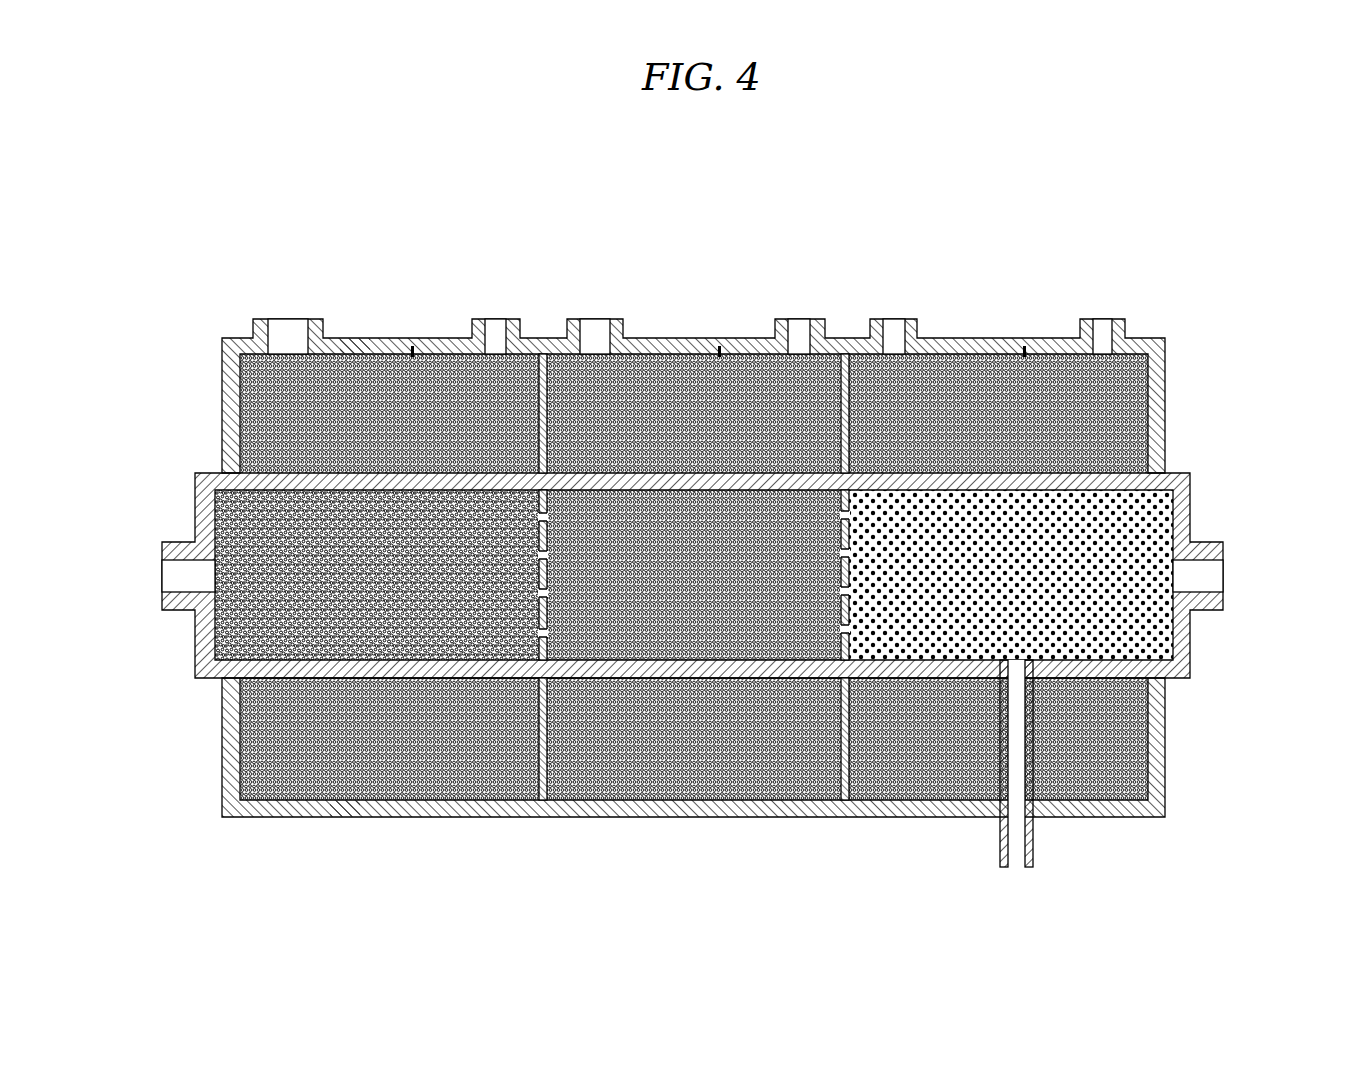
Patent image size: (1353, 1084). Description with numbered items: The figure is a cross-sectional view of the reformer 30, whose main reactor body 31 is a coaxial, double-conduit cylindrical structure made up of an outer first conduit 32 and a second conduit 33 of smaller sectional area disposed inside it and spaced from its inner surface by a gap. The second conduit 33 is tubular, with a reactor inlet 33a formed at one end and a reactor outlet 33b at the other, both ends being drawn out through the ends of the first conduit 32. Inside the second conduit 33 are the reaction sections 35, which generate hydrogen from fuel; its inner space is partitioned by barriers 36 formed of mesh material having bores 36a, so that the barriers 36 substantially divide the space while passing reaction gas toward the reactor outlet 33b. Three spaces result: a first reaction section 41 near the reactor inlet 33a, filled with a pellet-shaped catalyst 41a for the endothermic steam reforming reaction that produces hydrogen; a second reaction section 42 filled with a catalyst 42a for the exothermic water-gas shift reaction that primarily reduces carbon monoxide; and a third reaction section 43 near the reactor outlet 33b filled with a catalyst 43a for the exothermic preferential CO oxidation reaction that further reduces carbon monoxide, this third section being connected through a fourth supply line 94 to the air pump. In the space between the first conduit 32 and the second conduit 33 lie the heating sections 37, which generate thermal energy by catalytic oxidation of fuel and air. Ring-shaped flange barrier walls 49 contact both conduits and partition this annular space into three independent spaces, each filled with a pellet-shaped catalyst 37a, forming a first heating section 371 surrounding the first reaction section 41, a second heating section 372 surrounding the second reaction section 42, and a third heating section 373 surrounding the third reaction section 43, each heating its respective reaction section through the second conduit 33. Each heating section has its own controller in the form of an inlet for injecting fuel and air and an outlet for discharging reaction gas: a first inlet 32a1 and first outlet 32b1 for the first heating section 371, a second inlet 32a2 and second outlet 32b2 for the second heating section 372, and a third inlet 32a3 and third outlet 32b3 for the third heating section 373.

The reformer 30 is at (1195, 237).
The main reactor body 31 is at (740, 498).
The first conduit 32 is at (1150, 346).
The second conduit 33 is at (712, 557).
The first inlet 32a1 is at (290, 318).
The first outlet 32b1 is at (497, 318).
The second inlet 32a2 is at (593, 318).
The second outlet 32b2 is at (797, 318).
The third inlet 32a3 is at (893, 318).
The third outlet 32b3 is at (1103, 318).
The reactor inlet 33a is at (160, 576).
The reactor outlet 33b is at (1225, 576).
The reaction sections 35 is at (746, 622).
The barriers 36 is at (515, 663).
The bores 36a is at (572, 663).
The heating sections 37 is at (232, 408).
The catalyst 37a is at (360, 338).
The first heating section 371 is at (413, 345).
The second heating section 372 is at (720, 345).
The third heating section 373 is at (1025, 345).
The first reaction section 41 is at (418, 665).
The catalyst 41a is at (300, 662).
The second reaction section 42 is at (700, 665).
The catalyst 42a is at (652, 663).
The third reaction section 43 is at (946, 665).
The catalyst 43a is at (1148, 630).
The barrier walls 49 is at (542, 354).
The fourth supply line 94 is at (1033, 836).